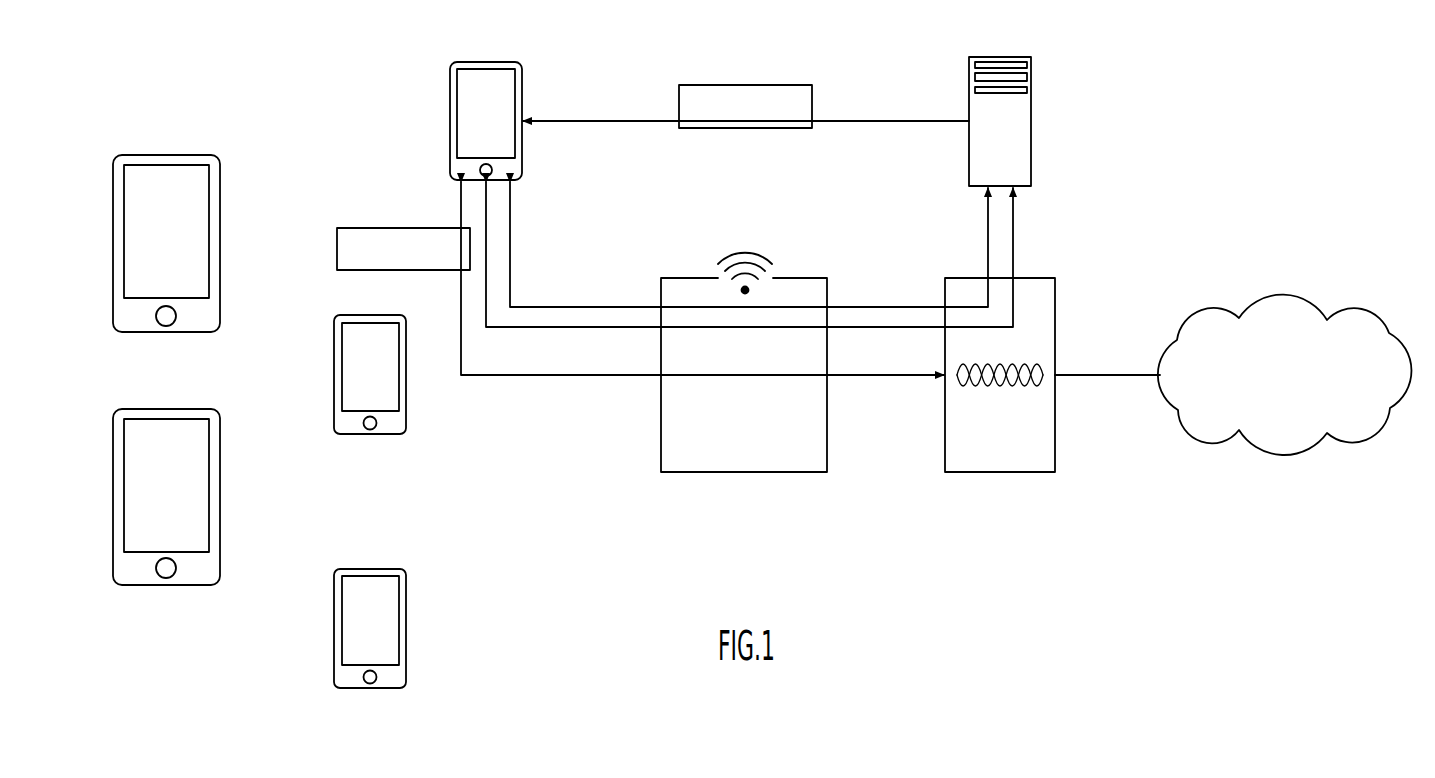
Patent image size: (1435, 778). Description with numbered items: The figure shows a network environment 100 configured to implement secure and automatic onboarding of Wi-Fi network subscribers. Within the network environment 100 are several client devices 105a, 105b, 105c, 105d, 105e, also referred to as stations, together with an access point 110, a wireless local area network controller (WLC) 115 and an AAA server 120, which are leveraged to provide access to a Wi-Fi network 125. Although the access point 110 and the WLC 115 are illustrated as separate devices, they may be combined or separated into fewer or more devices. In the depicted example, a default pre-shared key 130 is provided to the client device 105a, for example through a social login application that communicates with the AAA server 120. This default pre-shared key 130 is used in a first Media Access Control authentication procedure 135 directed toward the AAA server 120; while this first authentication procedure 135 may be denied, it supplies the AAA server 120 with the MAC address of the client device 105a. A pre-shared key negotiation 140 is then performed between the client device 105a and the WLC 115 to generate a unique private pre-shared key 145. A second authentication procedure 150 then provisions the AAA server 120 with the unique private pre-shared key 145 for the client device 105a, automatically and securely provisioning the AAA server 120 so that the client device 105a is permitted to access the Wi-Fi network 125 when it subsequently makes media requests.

The network environment 100 is at (1310, 55).
The client device 105a is at (448, 120).
The client device 105b is at (113, 218).
The client device 105c is at (334, 376).
The client device 105d is at (113, 486).
The client device 105e is at (334, 630).
The access point 110 is at (812, 278).
The wireless local area network controller 115 is at (1055, 360).
The AAA server 120 is at (1031, 142).
The Wi-Fi network 125 is at (1294, 387).
The default pre-shared key 130 is at (762, 85).
The first MAC authentication procedure 135 is at (1015, 268).
The pre-shared key negotiation 140 is at (862, 375).
The unique private pre-shared key 145 is at (403, 227).
The second authentication procedure 150 is at (988, 263).